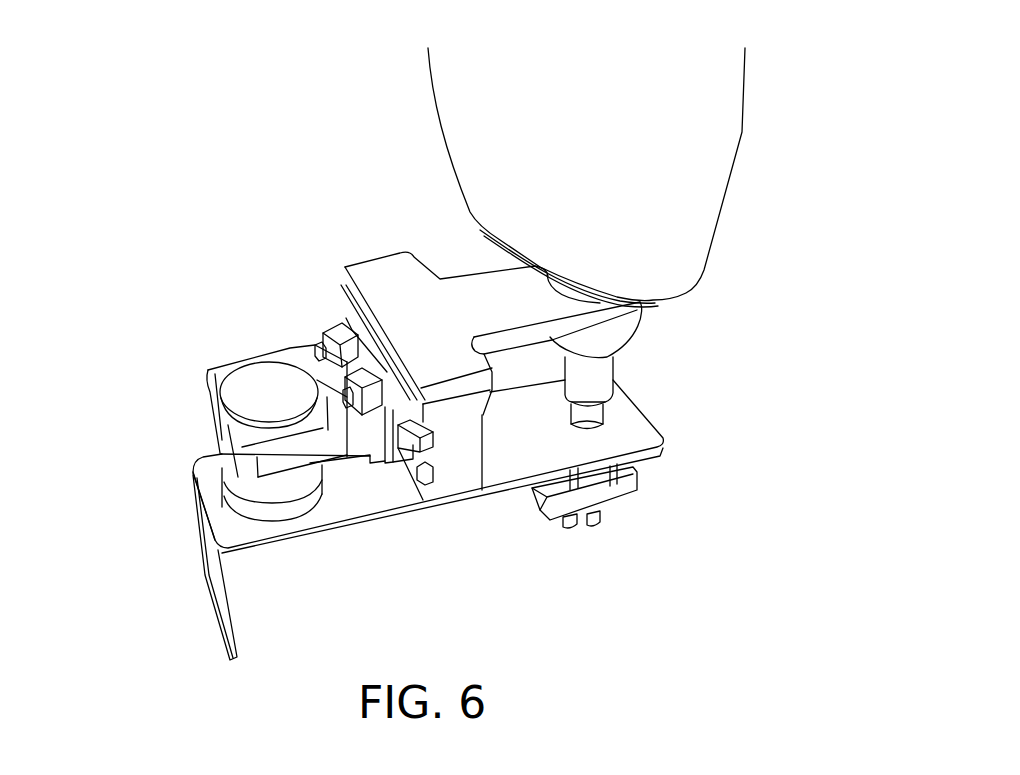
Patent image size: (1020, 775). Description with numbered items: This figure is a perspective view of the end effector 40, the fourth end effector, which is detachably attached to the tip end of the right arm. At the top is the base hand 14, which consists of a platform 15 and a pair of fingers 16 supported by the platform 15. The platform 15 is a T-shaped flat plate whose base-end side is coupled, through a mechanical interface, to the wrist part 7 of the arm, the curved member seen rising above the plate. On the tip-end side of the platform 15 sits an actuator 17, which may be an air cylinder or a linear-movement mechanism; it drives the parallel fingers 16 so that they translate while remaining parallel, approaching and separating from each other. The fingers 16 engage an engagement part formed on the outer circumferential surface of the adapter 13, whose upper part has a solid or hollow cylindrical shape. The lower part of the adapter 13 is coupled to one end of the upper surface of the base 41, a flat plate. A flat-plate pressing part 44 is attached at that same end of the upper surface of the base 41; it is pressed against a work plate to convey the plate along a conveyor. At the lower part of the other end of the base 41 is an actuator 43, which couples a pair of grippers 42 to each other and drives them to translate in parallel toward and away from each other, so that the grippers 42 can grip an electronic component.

The wrist part 7 is at (460, 113).
The adapter 13 is at (268, 380).
The base hand 14 is at (320, 303).
The platform 15 is at (383, 278).
The fingers 16 is at (225, 368).
The actuator 17 is at (459, 482).
The end effector 40 is at (216, 252).
The base 41 is at (213, 490).
The grippers 42 is at (572, 528).
The actuator 43 is at (633, 472).
The pressing part 44 is at (208, 600).